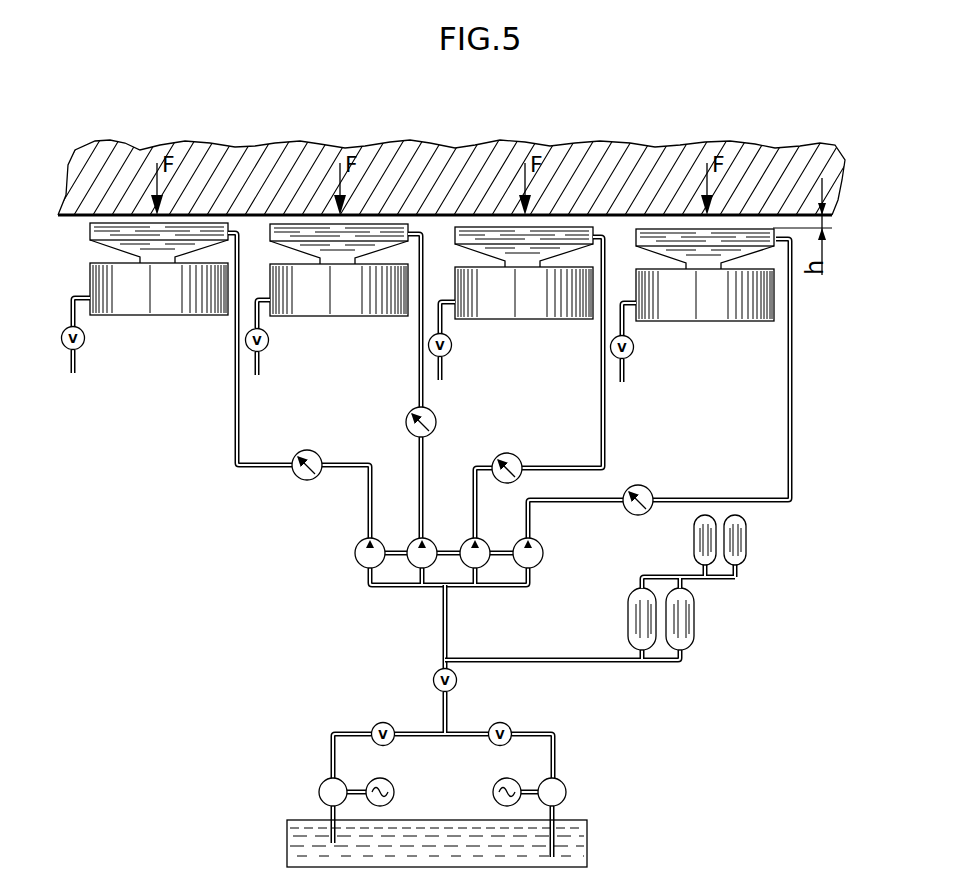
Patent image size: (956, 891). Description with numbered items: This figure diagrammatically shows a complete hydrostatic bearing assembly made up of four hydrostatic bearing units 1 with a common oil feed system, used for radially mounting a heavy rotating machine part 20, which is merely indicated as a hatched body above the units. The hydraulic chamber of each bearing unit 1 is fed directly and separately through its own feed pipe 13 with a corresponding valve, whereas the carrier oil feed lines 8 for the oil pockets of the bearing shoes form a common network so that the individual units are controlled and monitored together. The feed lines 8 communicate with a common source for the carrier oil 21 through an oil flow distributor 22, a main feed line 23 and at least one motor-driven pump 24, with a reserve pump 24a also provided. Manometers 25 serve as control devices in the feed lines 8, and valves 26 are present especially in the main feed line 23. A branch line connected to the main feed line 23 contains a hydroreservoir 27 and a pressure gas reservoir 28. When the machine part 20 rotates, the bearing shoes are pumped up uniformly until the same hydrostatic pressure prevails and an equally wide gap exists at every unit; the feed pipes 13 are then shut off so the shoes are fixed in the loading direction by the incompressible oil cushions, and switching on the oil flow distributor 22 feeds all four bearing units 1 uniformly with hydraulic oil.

The hydrostatic bearing unit 1 is at (180, 318).
The carrier oil feed line 8 is at (237, 447).
The feed pipe 13 is at (75, 308).
The rotating machine part 20 is at (82, 198).
The carrier oil source 21 is at (582, 856).
The oil flow distributor 22 is at (355, 562).
The main feed line 23 is at (444, 622).
The motor-driven pump 24 is at (565, 791).
The reserve pump 24a is at (320, 790).
The manometer 25 is at (303, 480).
The valve 26 is at (386, 722).
The hydroreservoir 27 is at (638, 614).
The pressure gas reservoir 28 is at (740, 540).